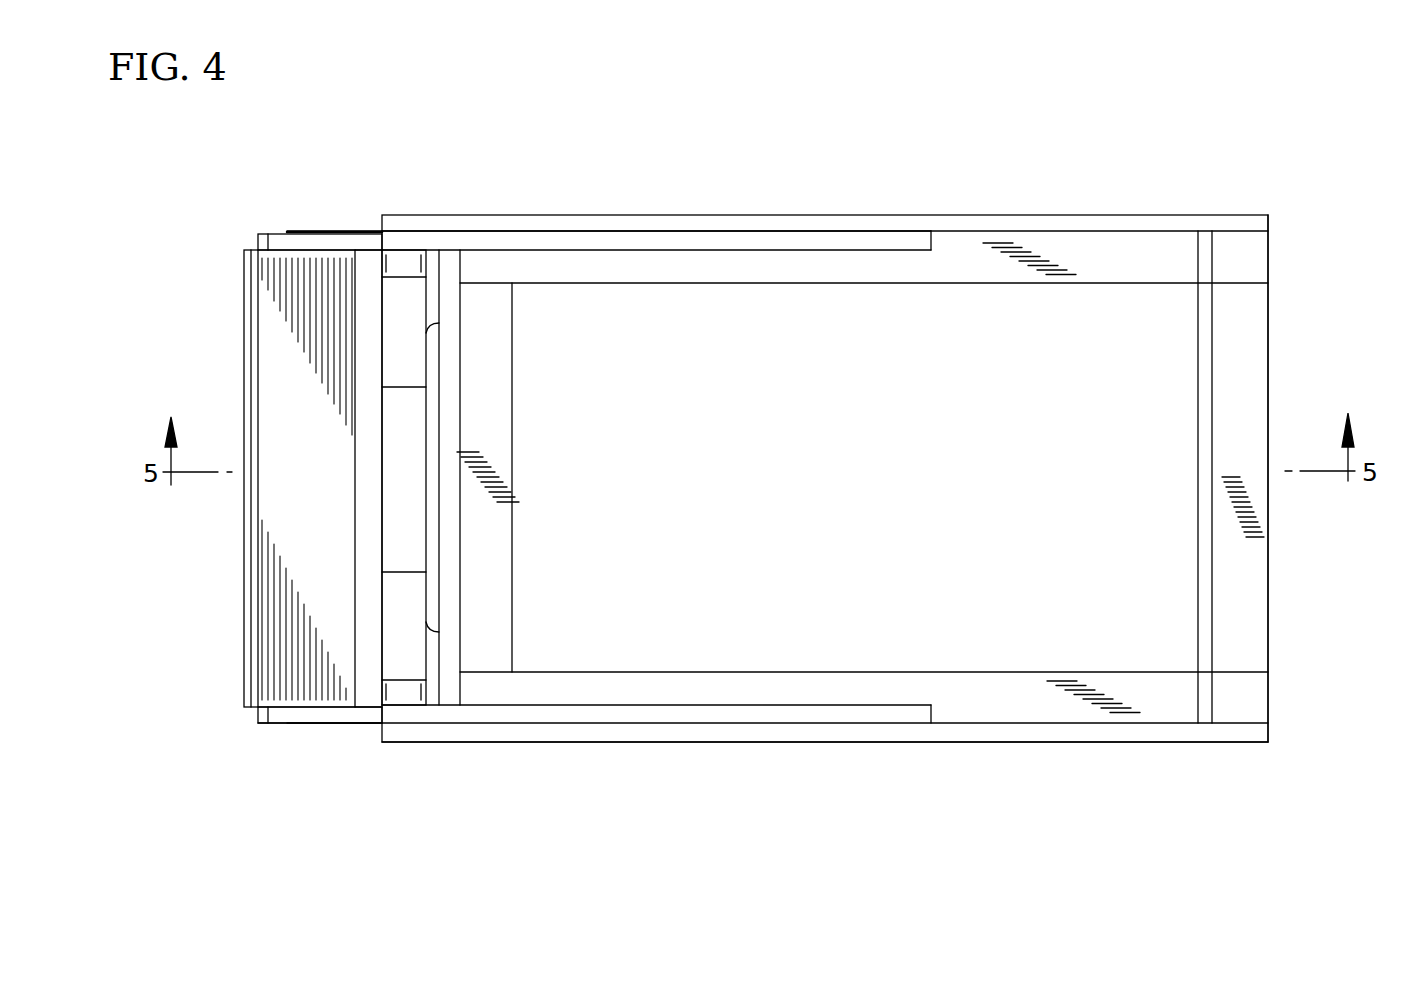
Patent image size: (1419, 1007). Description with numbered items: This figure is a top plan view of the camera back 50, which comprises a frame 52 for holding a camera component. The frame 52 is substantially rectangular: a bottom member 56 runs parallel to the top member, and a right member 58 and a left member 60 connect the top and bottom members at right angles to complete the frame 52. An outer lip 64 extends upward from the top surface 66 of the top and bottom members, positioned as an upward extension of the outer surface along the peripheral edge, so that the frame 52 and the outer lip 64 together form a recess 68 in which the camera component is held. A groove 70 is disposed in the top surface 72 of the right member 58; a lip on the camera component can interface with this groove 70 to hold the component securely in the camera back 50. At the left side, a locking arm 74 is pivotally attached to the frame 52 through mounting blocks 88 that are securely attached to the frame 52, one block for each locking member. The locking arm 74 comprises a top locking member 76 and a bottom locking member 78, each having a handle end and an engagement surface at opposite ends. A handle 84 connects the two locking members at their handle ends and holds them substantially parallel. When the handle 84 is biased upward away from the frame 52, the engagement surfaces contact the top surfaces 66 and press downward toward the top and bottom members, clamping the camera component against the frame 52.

The camera back 50 is at (772, 146).
The frame 52 is at (1117, 215).
The bottom member 56 is at (890, 742).
The right member 58 is at (1241, 319).
The left member 60 is at (515, 478).
The outer lip 64 is at (970, 217).
The top surface 66 is at (1010, 700).
The recess 68 is at (1030, 500).
The groove 70 is at (1207, 606).
The top surface of right member 72 is at (1238, 650).
The locking arm 74 is at (275, 232).
The top locking member 76 is at (360, 232).
The bottom locking member 78 is at (330, 724).
The handle 84 is at (305, 612).
The mounting block 88 is at (403, 325).